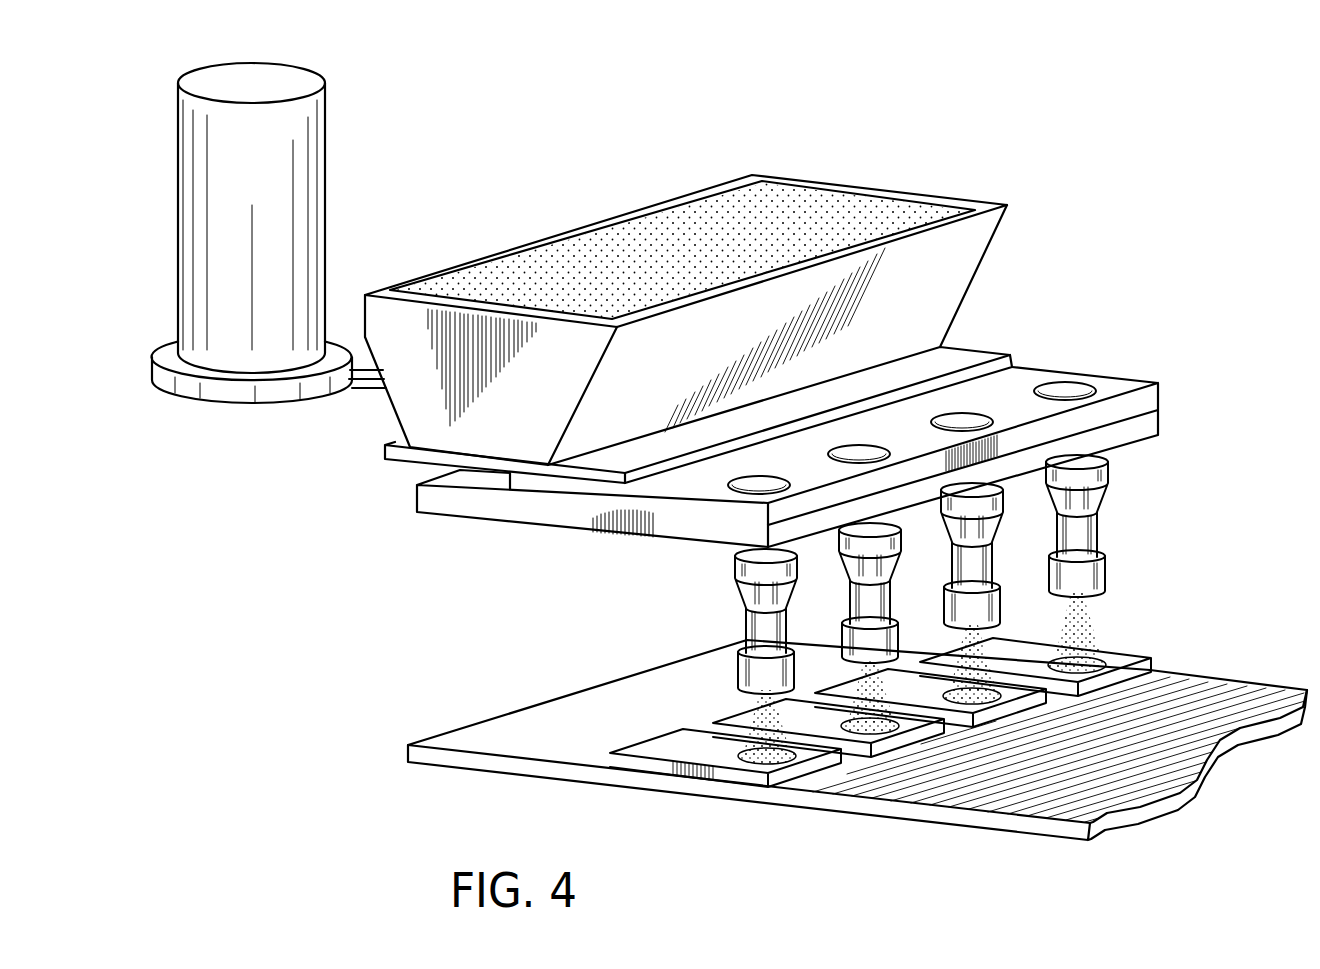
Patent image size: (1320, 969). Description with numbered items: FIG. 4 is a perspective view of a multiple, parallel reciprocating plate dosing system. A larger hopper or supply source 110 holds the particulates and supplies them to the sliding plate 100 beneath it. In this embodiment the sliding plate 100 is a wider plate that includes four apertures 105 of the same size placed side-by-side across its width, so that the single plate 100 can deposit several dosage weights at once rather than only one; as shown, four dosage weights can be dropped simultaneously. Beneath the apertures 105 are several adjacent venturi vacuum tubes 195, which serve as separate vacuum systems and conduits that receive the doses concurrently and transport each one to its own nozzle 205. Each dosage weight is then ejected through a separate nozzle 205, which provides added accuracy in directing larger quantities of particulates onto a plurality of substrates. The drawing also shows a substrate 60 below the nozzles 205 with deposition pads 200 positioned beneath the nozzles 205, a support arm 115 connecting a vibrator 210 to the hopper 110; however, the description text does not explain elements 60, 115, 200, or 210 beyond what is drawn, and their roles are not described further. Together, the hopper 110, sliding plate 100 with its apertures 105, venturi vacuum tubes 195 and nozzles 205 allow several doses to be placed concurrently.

The substrate 60 is at (857, 772).
The sliding plate 100 is at (787, 467).
The apertures 105 is at (967, 420).
The hopper or supply source 110 is at (1020, 248).
The support arm 115 is at (358, 410).
The venturi vacuum tubes 195 is at (995, 603).
The deposition pads 200 is at (665, 745).
The nozzles 205 is at (1090, 578).
The vibrator 210 is at (150, 81).